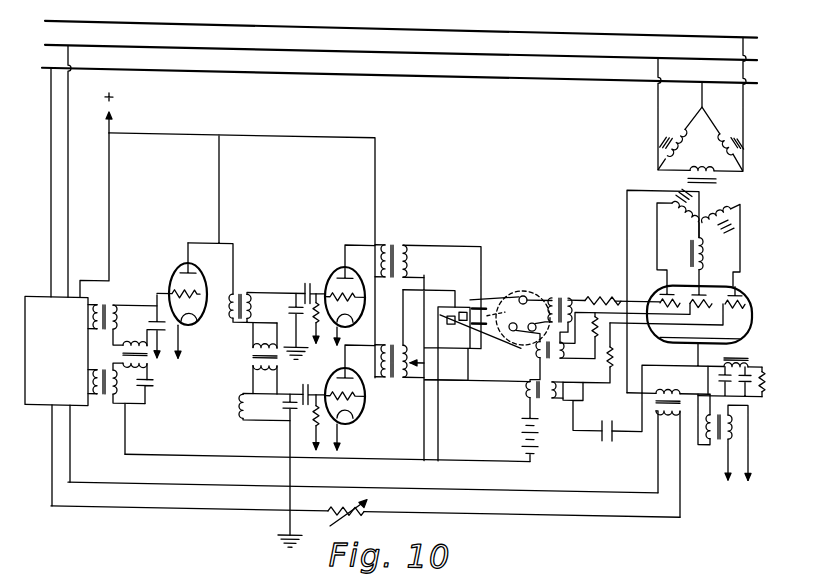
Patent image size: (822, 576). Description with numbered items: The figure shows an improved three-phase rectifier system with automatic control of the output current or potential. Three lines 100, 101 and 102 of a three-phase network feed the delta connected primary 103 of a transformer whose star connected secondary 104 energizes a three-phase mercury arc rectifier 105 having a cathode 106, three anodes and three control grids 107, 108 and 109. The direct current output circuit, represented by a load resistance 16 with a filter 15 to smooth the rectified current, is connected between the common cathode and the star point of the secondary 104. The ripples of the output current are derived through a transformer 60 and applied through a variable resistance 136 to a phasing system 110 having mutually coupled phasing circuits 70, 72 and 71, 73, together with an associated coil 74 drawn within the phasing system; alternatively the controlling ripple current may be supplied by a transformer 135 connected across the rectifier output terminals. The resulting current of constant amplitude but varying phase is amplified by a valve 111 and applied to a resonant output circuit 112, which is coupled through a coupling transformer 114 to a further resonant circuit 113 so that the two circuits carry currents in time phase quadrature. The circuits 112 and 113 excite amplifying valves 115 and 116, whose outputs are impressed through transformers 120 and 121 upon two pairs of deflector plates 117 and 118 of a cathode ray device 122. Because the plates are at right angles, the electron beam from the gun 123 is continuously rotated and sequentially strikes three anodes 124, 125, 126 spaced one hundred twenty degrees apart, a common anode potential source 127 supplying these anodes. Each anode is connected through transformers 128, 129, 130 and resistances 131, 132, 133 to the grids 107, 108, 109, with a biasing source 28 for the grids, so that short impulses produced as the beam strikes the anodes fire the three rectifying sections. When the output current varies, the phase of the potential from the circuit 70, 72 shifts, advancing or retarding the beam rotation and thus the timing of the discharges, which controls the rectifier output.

The line of three-phase network 100 is at (416, 77).
The line of three-phase network 101 is at (418, 54).
The line of three-phase network 102 is at (418, 31).
The delta connected primary 103 is at (690, 145).
The star connected secondary 104 is at (707, 196).
The three-phase mercury arc rectifier 105 is at (752, 312).
The cathode 106 is at (745, 330).
The control grid 107 is at (660, 285).
The control grid 108 is at (703, 280).
The control grid 109 is at (745, 290).
The phasing system 110 is at (56, 350).
The valve 111 is at (176, 265).
The resonant output circuit 112 is at (260, 309).
The resonant circuit 113 is at (255, 407).
The coupling transformer 114 is at (253, 352).
The amplifying valve 115 is at (330, 270).
The amplifying valve 116 is at (362, 410).
The deflector plates 117 is at (488, 298).
The deflector plates 118 is at (463, 304).
The transformer 120 is at (393, 240).
The transformer 121 is at (387, 372).
The cathode ray device 122 is at (521, 283).
The gun 123 is at (443, 312).
The anode 124 is at (529, 290).
The anode 125 is at (510, 322).
The anode 126 is at (554, 314).
The common anode potential source 127 is at (518, 431).
The transformer 128 is at (570, 287).
The transformer 129 is at (548, 351).
The transformer 130 is at (540, 392).
The resistance 131 is at (600, 280).
The resistance 132 is at (581, 335).
The resistance 133 is at (588, 372).
The transformer 135 is at (724, 408).
The variable resistance 136 is at (355, 513).
The filter 15 is at (745, 357).
The load resistance 16 is at (766, 372).
The biasing source 28 is at (608, 430).
The transformer 60 is at (662, 381).
The phasing circuit 70 is at (113, 303).
The phasing circuit 71 is at (113, 369).
The phasing circuit 72 is at (149, 323).
The phasing circuit 73 is at (153, 383).
The inductance coil 74 is at (148, 365).